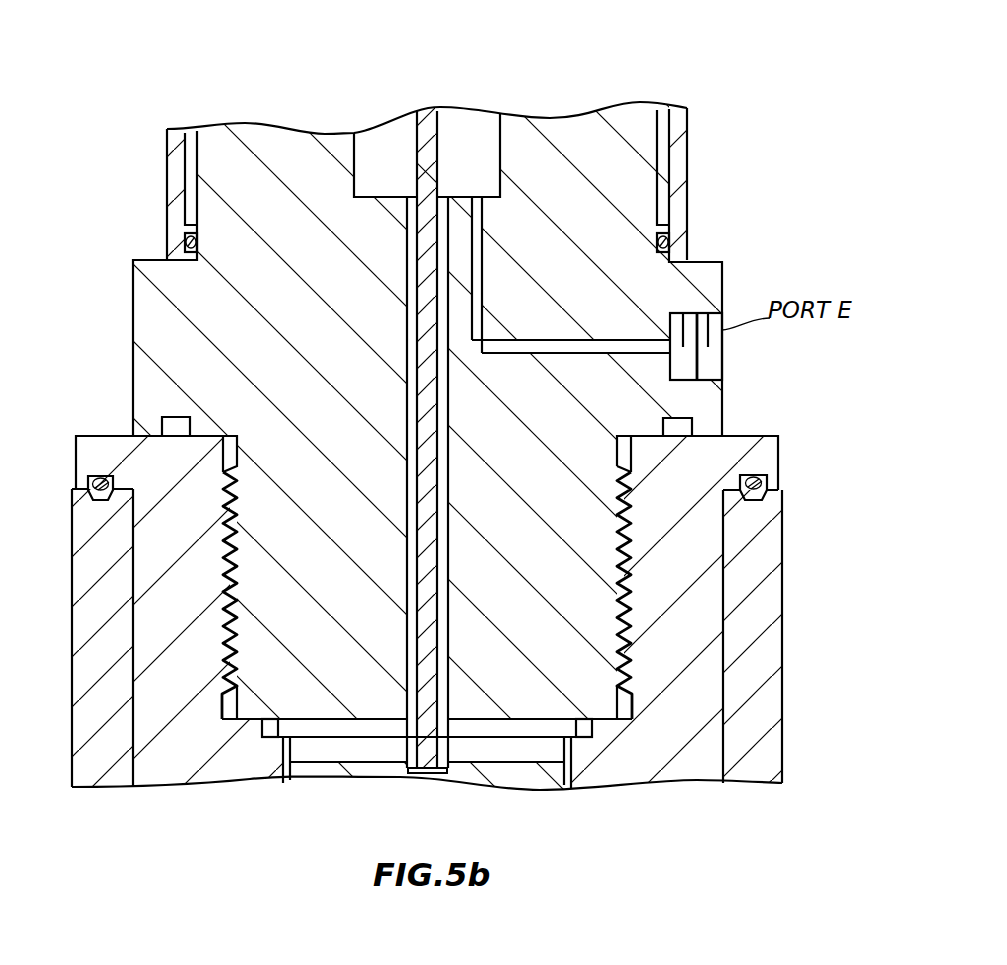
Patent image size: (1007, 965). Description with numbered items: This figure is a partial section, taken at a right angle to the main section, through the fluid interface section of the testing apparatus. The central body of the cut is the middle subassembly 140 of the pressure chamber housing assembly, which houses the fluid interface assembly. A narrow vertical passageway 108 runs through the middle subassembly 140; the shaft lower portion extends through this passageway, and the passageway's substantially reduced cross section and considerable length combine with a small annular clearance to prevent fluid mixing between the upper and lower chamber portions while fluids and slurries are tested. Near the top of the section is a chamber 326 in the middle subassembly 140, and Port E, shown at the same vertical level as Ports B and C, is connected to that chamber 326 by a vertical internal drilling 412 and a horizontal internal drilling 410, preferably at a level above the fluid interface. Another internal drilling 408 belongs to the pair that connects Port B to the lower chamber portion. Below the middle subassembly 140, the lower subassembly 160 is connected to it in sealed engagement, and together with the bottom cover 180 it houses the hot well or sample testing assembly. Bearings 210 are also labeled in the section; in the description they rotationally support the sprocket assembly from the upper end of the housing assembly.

The passageway 108 is at (413, 332).
The middle subassembly 140 is at (707, 285).
The lower subassembly 160 is at (747, 463).
The bottom cover 180 is at (765, 607).
The bearings 210 is at (430, 397).
The chamber 326 is at (466, 133).
The internal drilling 408 is at (290, 597).
The internal drilling 410 is at (563, 340).
The internal drilling 412 is at (483, 252).